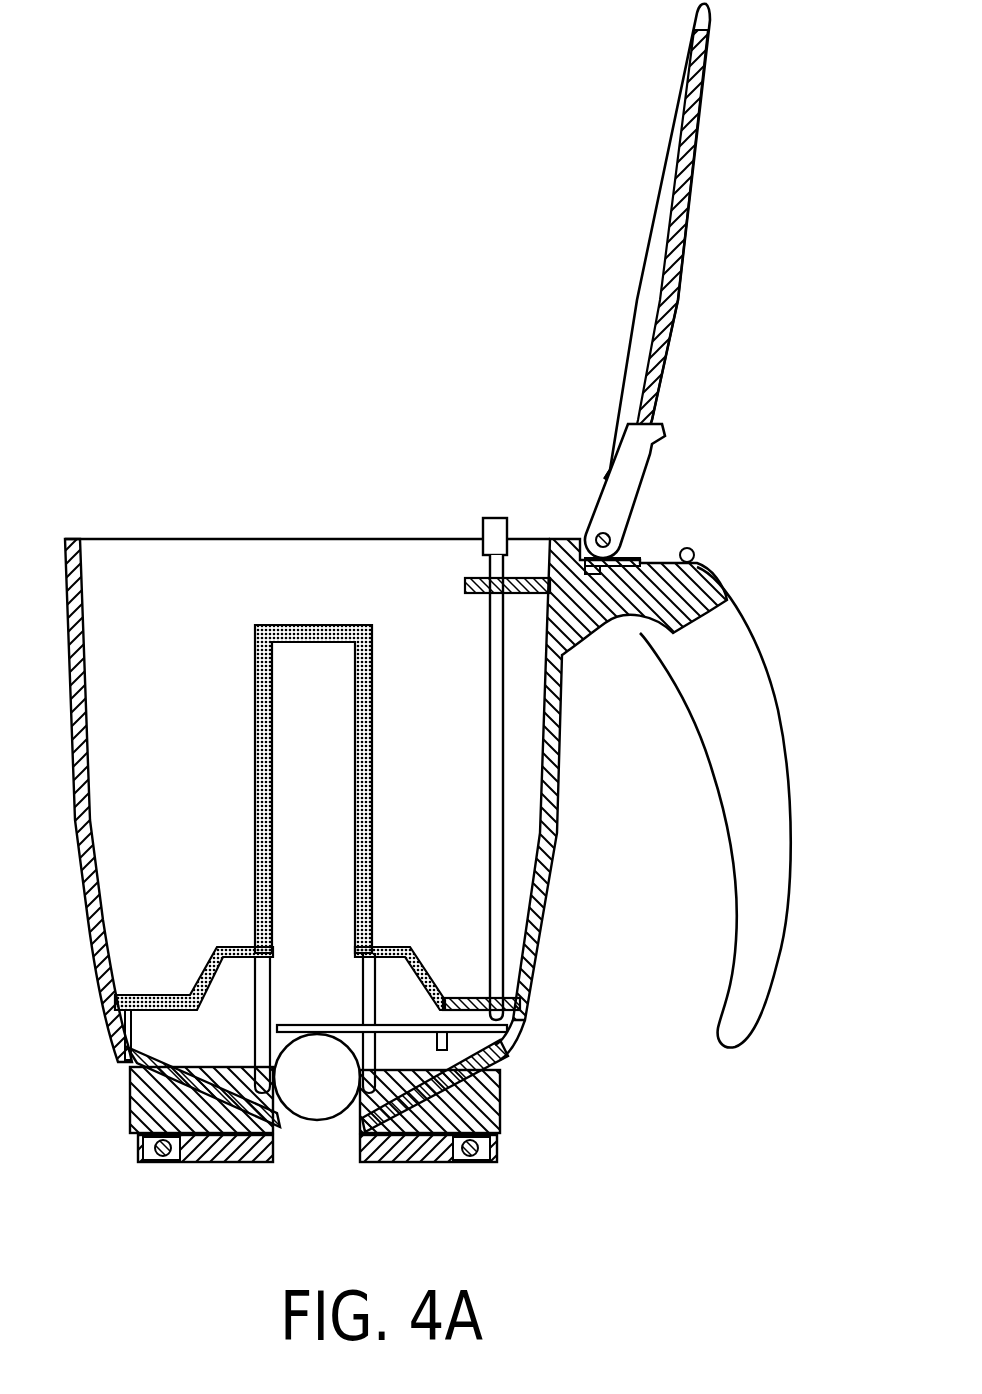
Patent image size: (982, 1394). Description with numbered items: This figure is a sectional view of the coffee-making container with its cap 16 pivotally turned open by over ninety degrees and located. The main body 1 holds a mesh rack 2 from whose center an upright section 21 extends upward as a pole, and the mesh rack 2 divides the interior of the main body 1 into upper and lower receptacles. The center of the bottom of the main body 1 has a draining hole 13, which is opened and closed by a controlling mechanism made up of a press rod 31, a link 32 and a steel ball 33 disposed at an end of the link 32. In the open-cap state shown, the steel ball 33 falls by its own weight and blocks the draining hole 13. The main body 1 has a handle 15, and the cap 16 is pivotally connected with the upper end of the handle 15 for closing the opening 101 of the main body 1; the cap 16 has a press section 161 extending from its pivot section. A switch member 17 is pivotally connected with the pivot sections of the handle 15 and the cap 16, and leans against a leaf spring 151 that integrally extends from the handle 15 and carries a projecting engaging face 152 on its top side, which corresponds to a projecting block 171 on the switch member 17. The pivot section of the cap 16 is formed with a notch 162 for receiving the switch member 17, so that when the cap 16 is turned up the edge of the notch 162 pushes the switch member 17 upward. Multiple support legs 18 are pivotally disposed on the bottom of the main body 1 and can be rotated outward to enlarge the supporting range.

The main body 1 is at (544, 860).
The opening 101 is at (102, 568).
The mesh rack 2 is at (403, 948).
The draining hole 13 is at (293, 1128).
The handle 15 is at (757, 708).
The leaf spring 151 is at (621, 567).
The engaging face 152 is at (593, 570).
The cap 16 is at (672, 252).
The press section 161 is at (690, 548).
The notch 162 is at (600, 520).
The switch member 17 is at (653, 460).
The projecting block 171 is at (588, 528).
The support legs 18 is at (407, 1153).
The upright section 21 is at (372, 788).
The press rod 31 is at (495, 698).
The link 32 is at (500, 1117).
The steel ball 33 is at (318, 1062).